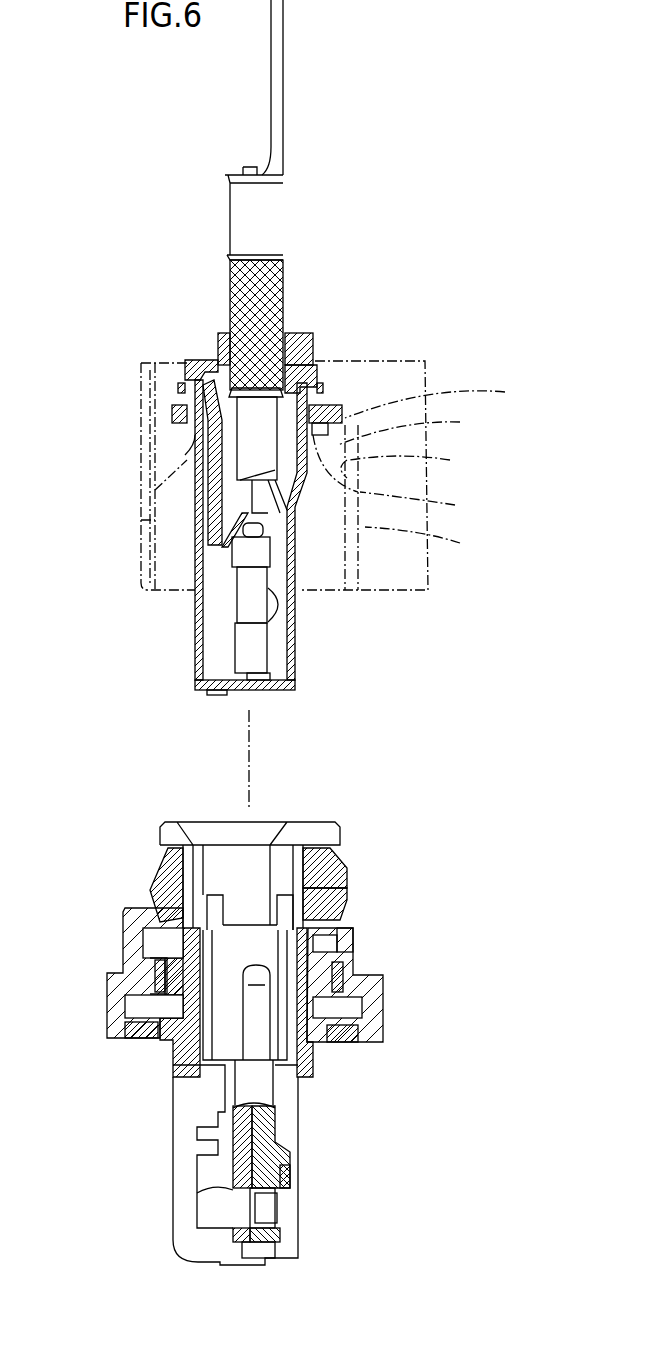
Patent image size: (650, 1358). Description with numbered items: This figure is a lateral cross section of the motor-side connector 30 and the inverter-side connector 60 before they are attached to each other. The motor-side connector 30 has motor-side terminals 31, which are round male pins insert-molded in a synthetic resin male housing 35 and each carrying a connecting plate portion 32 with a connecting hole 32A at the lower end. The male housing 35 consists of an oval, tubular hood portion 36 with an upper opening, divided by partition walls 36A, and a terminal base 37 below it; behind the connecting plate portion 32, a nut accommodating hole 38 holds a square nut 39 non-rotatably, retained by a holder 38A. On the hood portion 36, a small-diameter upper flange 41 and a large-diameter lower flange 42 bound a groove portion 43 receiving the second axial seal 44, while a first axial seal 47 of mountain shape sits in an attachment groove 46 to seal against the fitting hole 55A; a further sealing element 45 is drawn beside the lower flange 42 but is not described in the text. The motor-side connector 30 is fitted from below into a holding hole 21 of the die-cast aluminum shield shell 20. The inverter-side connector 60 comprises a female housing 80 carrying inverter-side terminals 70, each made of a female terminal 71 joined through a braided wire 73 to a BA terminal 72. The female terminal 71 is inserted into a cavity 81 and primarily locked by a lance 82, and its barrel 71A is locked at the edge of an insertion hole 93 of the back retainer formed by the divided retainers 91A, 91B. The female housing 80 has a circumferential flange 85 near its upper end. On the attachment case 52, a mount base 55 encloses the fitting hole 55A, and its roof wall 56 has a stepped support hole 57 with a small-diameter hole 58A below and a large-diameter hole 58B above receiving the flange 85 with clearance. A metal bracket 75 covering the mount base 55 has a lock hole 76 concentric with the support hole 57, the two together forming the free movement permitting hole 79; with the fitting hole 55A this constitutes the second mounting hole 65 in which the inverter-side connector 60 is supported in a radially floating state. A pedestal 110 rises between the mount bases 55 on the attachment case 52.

The BA terminal 72 is at (283, 100).
The inverter-side terminal 70 is at (283, 228).
The braided wire 73 is at (230, 273).
The divided retainer 91A is at (218, 345).
The divided retainer 91B is at (320, 338).
The insertion hole 93 is at (231, 333).
The lock hole 76 is at (311, 386).
The bracket 75 is at (352, 420).
The female housing 80 is at (295, 652).
The barrel 71A is at (252, 453).
The female terminal 71 is at (237, 597).
The cavity 81 is at (272, 614).
The lance 82 is at (260, 531).
The inverter-side connector 60 is at (175, 642).
The connector attachment case 52 is at (141, 388).
The second mounting hole 65 is at (497, 403).
The roof wall 56 is at (439, 396).
The free movement permitting hole 79 is at (488, 431).
The fitting hole 55A is at (419, 459).
The support hole 57 is at (422, 506).
The pedestal 110 is at (431, 543).
The large-diameter hole 58B is at (170, 410).
The flange 85 is at (188, 450).
The small-diameter hole 58A is at (165, 482).
The mount base 55 is at (140, 520).
The male housing 35 is at (180, 1050).
The first axial seal 47 is at (152, 868).
The attachment groove 46 is at (342, 868).
The hood portion 36 is at (347, 896).
The partition wall 36A is at (240, 948).
The motor-side terminal 31 is at (262, 995).
The upper flange 41 is at (350, 940).
The shield shell 20 is at (380, 1000).
The groove portion 43 is at (155, 968).
The second axial seal 44 is at (157, 983).
The lower flange 42 is at (343, 988).
The holding hole 21 is at (130, 1035).
The O-ring 45 is at (347, 1042).
The motor-side connector 30 is at (148, 1095).
The terminal base 37 is at (265, 1163).
The connecting plate portion 32 is at (233, 1168).
The holder 38A is at (290, 1187).
The connecting hole 32A is at (230, 1192).
The square nut 39 is at (237, 1240).
The nut accommodating hole 38 is at (278, 1232).